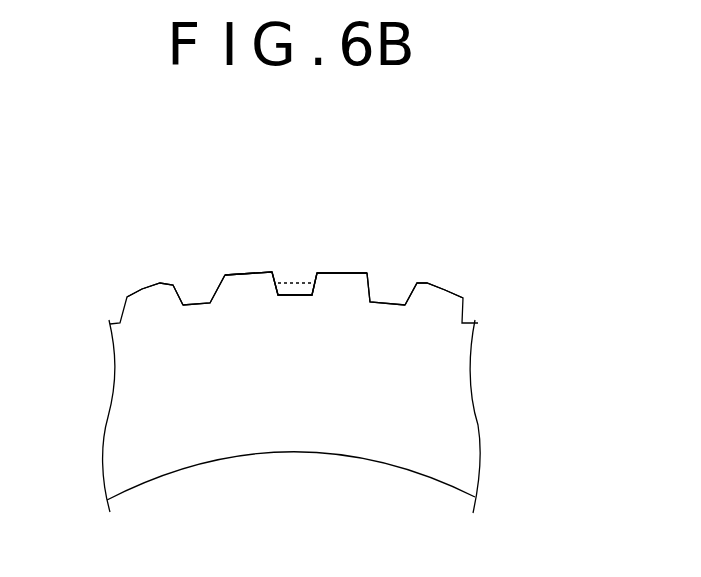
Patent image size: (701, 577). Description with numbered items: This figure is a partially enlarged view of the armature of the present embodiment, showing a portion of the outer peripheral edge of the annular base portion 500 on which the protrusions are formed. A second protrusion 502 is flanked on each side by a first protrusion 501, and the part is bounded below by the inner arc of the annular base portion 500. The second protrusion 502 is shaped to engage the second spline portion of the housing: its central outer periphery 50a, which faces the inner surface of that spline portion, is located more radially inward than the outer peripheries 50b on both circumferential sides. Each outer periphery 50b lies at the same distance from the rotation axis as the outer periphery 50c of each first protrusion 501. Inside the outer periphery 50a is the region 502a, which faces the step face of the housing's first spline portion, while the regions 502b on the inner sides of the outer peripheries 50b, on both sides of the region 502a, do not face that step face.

The annular base portion 500 is at (285, 423).
The first protrusion 501 is at (123, 278).
The second protrusion 502 is at (245, 202).
The outer periphery 50a is at (288, 282).
The region 502a is at (300, 292).
The outer periphery 50b is at (248, 272).
The region 502b is at (220, 276).
The outer periphery 50c is at (160, 283).